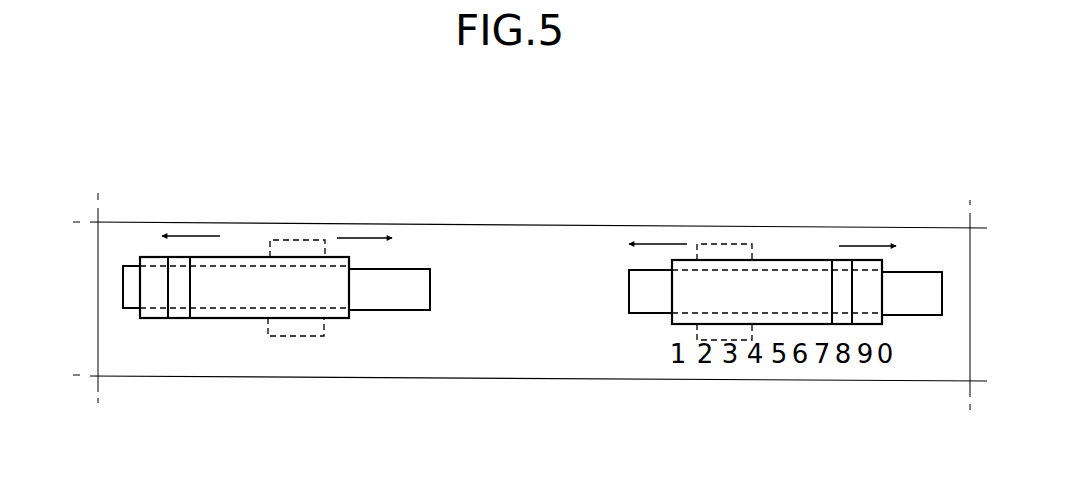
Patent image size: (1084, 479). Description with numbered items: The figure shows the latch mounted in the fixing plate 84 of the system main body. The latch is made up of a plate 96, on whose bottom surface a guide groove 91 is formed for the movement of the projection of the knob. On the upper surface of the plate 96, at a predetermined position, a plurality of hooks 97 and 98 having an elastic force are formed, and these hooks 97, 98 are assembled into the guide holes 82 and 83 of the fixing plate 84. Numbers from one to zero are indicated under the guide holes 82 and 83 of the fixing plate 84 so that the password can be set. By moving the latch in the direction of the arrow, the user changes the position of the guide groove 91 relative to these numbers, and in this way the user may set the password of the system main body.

The guide hole 82 is at (405, 297).
The guide hole 83 is at (659, 313).
The fixing plate 84 is at (558, 255).
The guide groove 91 is at (182, 305).
The plate 96 is at (155, 307).
The hook 97 is at (308, 336).
The hook 98 is at (308, 238).